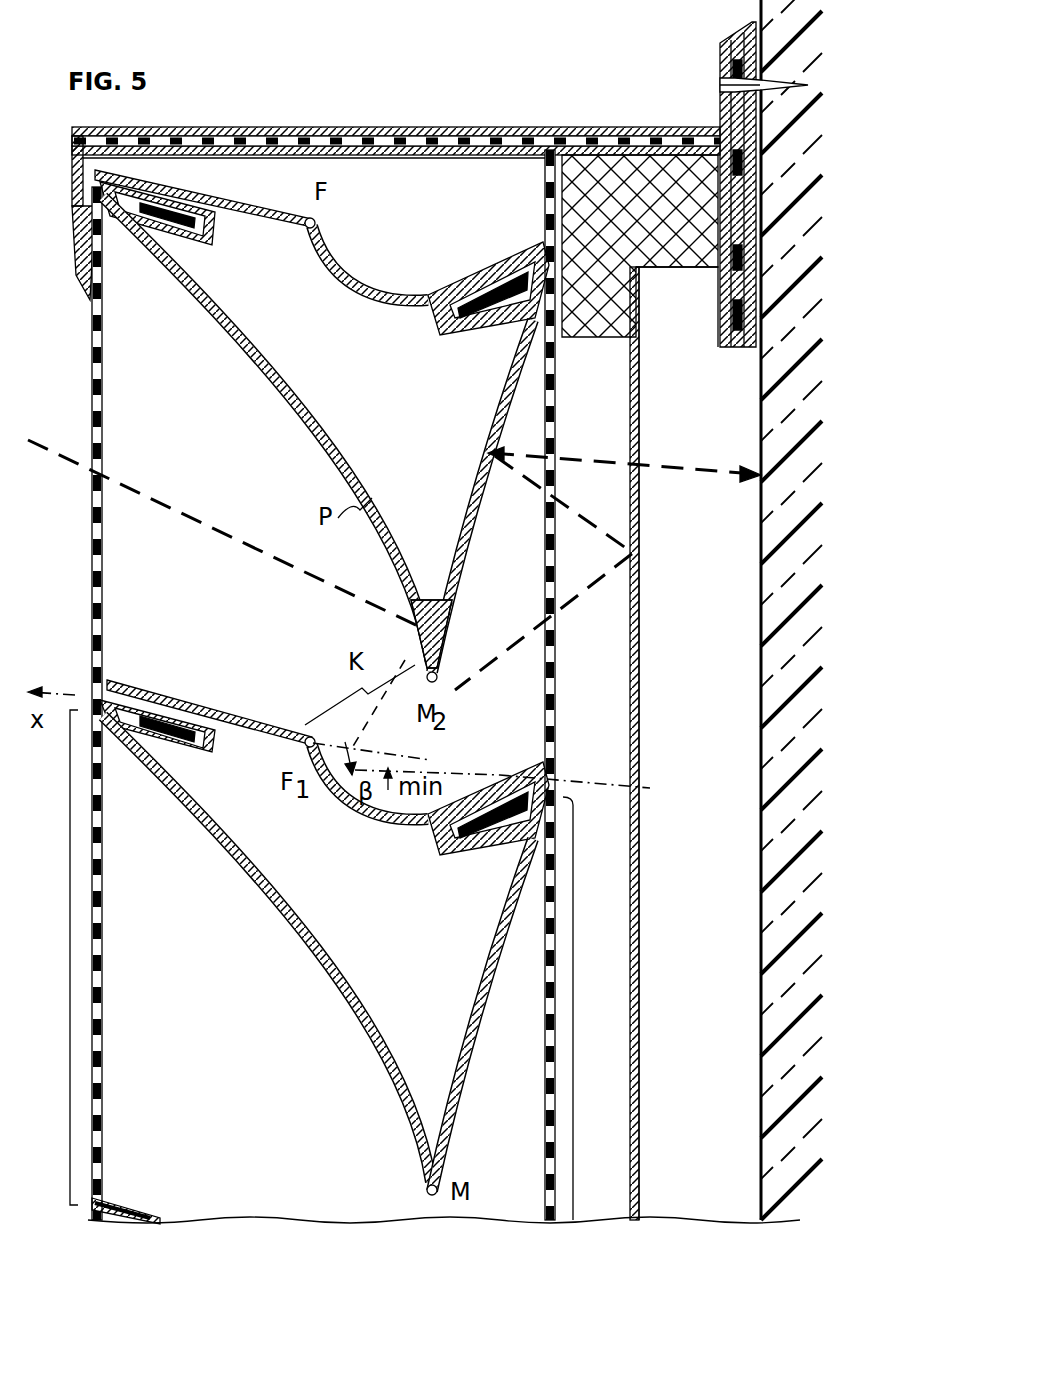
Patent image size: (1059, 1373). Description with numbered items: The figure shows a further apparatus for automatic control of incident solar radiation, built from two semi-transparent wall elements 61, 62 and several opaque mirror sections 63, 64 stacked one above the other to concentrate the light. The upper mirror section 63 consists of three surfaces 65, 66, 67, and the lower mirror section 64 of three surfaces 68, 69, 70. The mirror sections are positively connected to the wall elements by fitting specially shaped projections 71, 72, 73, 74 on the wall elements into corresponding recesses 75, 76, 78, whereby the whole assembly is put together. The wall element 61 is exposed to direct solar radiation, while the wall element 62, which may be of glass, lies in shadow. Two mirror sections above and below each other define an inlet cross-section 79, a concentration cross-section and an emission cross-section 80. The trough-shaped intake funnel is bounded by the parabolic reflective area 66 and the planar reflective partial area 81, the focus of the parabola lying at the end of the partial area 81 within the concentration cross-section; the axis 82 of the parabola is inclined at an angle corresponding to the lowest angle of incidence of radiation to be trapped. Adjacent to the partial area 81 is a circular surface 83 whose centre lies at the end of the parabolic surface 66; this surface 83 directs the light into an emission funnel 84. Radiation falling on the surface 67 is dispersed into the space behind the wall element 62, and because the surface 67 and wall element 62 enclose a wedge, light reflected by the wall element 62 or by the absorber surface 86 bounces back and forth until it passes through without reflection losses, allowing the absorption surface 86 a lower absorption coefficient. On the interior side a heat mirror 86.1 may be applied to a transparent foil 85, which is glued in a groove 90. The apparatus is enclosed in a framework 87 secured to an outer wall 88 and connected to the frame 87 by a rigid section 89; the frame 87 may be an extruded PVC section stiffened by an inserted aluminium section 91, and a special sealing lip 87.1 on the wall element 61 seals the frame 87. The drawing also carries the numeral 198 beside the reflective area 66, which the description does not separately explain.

The wall element 61 is at (102, 515).
The wall element 62 is at (556, 708).
The mirror section 63 is at (332, 228).
The mirror section 64 is at (286, 725).
The surface 65 is at (360, 280).
The reflective area 66 is at (300, 425).
The surface 67 is at (488, 476).
The surface 68 is at (405, 720).
The surface 69 is at (325, 965).
The surface 70 is at (490, 1010).
The projection 71 is at (203, 198).
The projection 72 is at (324, 544).
The projection 73 is at (488, 275).
The projection 74 is at (477, 887).
The recess 75 is at (200, 207).
The recess 76 is at (209, 696).
The recess 78 is at (420, 887).
The inlet cross-section 79 is at (70, 944).
The emission cross-section 80 is at (573, 1036).
The reflective partial area 81 is at (240, 725).
The axis 82 is at (428, 760).
The circular surface 83 is at (500, 800).
The emission funnel 84 is at (512, 616).
The foil 85 is at (630, 462).
The absorber surface 86 is at (761, 440).
The heat mirror 86.1 is at (642, 540).
The framework 87 is at (342, 126).
The sealing lip 87.1 is at (78, 286).
The outer wall 88 is at (761, 388).
The rigid section 89 is at (604, 338).
The groove 90 is at (662, 302).
The aluminium section 91 is at (494, 126).
The reflector surface 198 is at (272, 384).